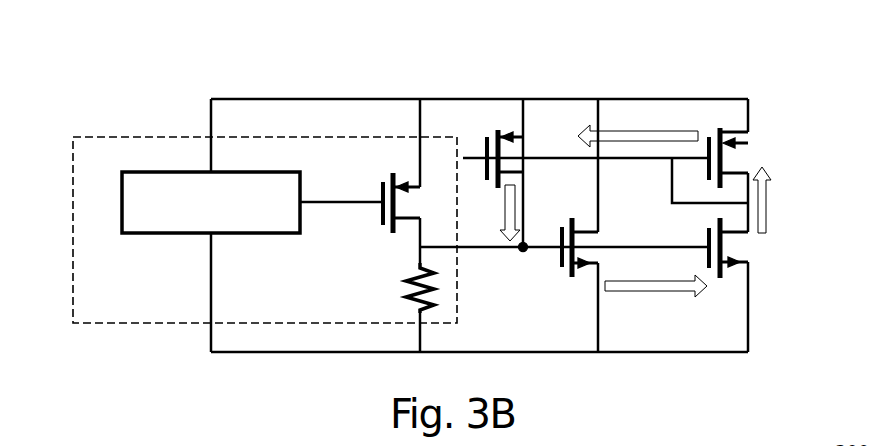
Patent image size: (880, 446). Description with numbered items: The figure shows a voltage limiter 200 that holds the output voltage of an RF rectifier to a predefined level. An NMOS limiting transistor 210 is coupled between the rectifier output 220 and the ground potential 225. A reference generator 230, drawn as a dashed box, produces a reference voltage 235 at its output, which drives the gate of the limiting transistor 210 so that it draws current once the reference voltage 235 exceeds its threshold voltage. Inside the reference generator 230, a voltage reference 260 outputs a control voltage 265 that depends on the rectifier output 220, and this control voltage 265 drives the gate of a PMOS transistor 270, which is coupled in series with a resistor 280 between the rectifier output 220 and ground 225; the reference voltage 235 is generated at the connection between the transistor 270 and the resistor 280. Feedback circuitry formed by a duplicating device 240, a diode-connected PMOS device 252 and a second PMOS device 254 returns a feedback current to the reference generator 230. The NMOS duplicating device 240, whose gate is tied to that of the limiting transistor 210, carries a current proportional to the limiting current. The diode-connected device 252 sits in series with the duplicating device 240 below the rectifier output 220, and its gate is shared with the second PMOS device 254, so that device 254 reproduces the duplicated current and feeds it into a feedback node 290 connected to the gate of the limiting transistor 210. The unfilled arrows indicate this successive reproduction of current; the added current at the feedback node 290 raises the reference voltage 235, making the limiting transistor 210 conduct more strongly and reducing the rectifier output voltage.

The voltage limiter 200 is at (693, 62).
The current sink device 210 is at (592, 231).
The output Vrec of the RF rectifier 220 is at (211, 99).
The ground potential 225 is at (211, 353).
The reference generator 230 is at (100, 137).
The reference voltage Vlim 235 is at (538, 246).
The current replica device 240 is at (722, 278).
The current mirror device 252 is at (721, 129).
The current copy device 254 is at (499, 131).
The voltage reference 260 is at (122, 208).
The voltage Vref 265 is at (340, 205).
The transistor m 270 is at (383, 185).
The resistor R 280 is at (406, 304).
The feedback node 290 is at (521, 249).